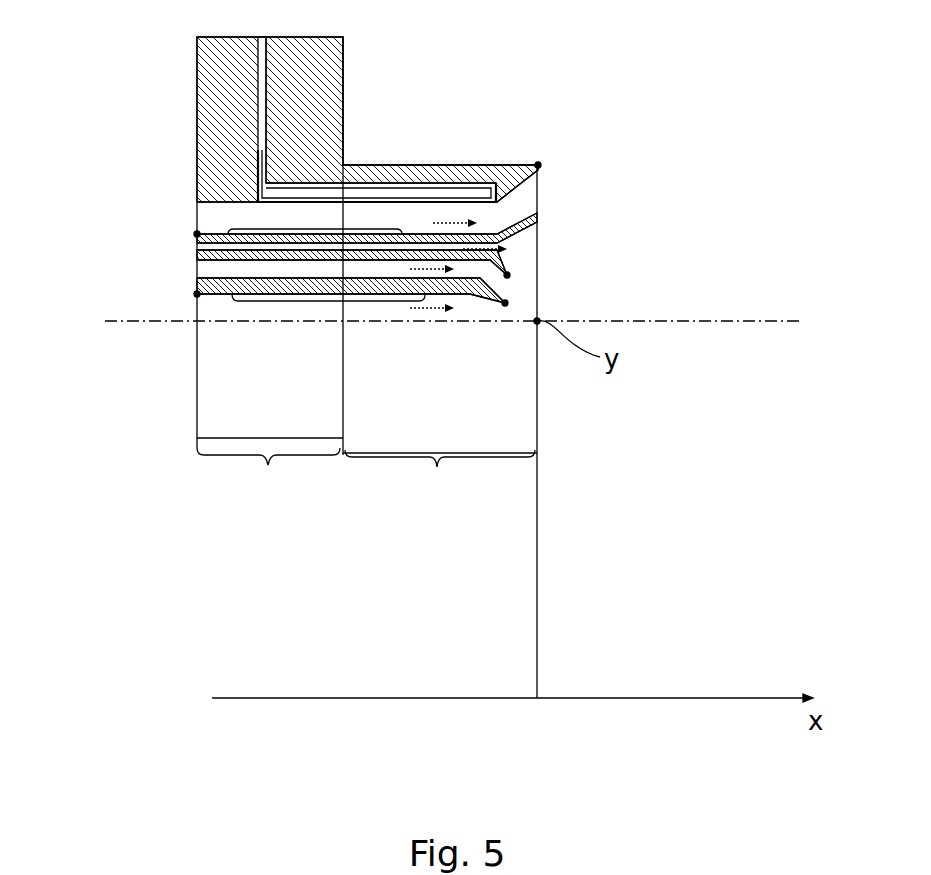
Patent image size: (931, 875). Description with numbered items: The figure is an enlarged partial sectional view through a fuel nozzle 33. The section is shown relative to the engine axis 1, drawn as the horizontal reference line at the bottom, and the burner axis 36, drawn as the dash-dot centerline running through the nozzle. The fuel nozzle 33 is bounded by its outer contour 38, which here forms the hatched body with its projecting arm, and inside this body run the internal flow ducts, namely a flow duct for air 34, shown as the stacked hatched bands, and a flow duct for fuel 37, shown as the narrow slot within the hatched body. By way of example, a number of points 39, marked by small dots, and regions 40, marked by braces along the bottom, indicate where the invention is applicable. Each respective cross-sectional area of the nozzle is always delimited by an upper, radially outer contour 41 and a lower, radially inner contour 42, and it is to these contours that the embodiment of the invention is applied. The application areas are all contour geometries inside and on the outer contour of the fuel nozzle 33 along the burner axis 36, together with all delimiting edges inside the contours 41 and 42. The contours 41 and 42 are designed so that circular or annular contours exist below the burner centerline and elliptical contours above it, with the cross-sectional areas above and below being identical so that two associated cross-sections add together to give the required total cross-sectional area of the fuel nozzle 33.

The engine axis 1 is at (667, 698).
The fuel nozzle 33 is at (450, 116).
The internal flow duct for air 34 is at (196, 212).
The burner axis 36 is at (680, 320).
The internal flow duct for fuel 37 is at (375, 192).
The outer contour 38 is at (481, 163).
The points 39 is at (196, 234).
The regions 40 is at (369, 473).
The upper (outer) contour 41 is at (320, 223).
The lower (inner) contour 42 is at (333, 150).